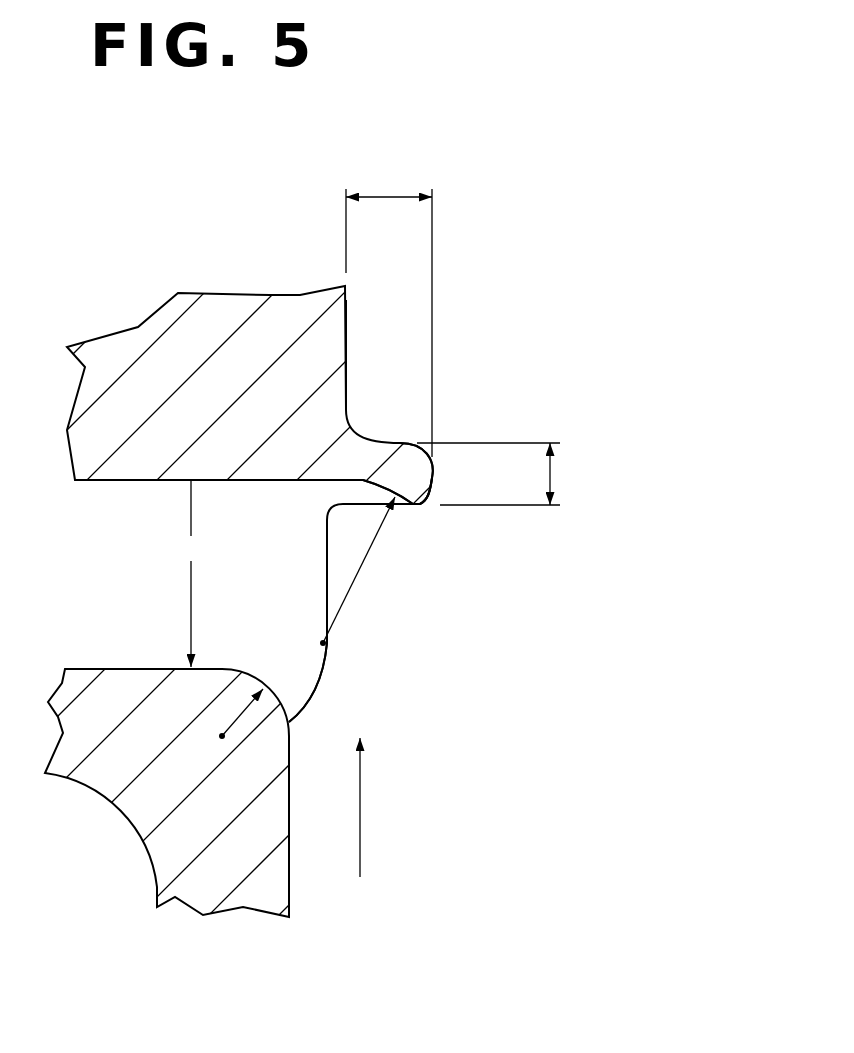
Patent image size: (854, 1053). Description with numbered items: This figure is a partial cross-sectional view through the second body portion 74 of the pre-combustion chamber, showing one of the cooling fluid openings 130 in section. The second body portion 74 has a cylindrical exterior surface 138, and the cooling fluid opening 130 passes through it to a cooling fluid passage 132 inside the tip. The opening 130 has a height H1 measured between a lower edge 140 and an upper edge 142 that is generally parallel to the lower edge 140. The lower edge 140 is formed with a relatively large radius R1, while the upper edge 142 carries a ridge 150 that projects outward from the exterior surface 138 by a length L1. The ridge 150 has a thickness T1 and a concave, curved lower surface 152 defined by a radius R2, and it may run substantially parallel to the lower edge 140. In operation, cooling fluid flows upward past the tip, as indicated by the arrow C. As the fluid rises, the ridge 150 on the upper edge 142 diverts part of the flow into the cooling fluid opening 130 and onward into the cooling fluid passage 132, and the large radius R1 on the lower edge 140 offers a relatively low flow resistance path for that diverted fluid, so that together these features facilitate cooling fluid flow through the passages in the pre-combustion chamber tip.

The second body portion 74 is at (127, 345).
The cylindrical exterior surface 138 is at (347, 338).
The ridge 150 is at (413, 468).
The concave, curved lower surface 152 is at (405, 508).
The upper edge 142 is at (452, 516).
The cooling fluid opening 130 is at (389, 646).
The lower edge 140 is at (308, 697).
The cooling fluid passage 132 is at (160, 577).
The height H1 is at (193, 550).
The radius R2 is at (323, 643).
The radius R1 is at (222, 736).
The length L1 is at (386, 196).
The thickness T1 is at (557, 472).
The arrow indicating upward cooling fluid flow C is at (358, 822).